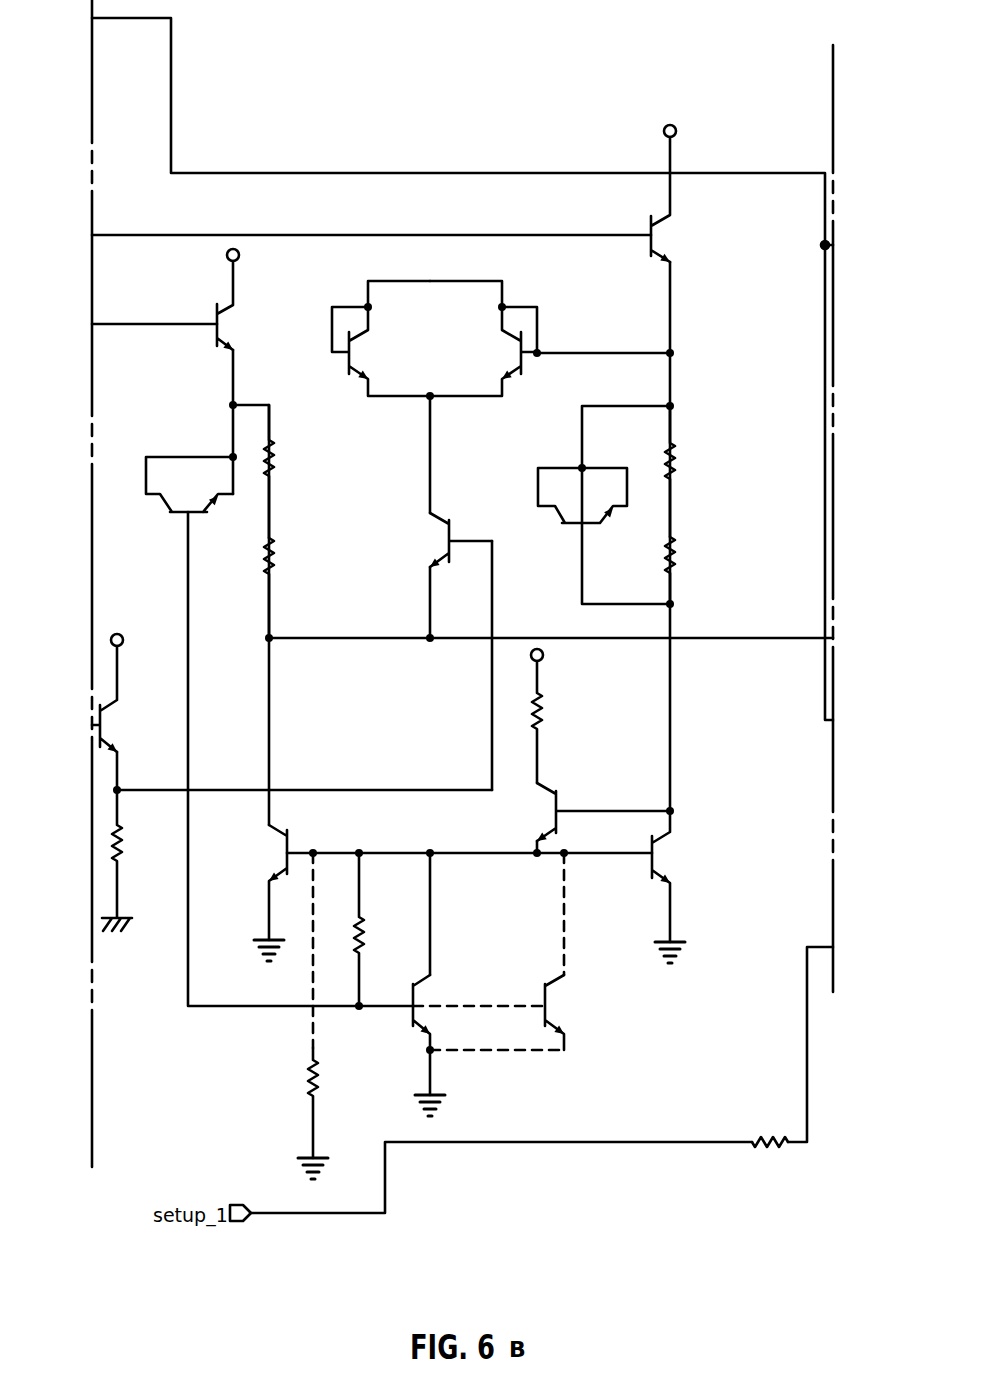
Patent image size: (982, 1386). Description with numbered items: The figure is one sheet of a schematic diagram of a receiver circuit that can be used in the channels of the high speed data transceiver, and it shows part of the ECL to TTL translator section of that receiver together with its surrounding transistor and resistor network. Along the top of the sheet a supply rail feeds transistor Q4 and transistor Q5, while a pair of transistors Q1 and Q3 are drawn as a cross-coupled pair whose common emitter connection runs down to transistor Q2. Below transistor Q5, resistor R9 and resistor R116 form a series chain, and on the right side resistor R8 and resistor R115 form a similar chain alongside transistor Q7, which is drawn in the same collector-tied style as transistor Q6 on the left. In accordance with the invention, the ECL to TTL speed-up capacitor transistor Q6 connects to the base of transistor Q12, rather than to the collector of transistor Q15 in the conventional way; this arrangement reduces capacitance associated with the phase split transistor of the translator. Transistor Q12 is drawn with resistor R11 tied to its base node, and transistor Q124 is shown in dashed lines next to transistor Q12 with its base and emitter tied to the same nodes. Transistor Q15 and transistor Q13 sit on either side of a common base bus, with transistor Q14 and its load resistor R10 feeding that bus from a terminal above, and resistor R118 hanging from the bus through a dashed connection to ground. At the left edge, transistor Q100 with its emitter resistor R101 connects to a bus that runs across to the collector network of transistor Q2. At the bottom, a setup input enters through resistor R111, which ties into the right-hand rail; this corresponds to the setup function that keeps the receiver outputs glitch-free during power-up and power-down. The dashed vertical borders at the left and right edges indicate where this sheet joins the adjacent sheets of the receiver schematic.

The transistor Q1 is at (381, 338).
The transistor Q2 is at (453, 540).
The transistor Q3 is at (483, 338).
The transistor Q4 is at (672, 193).
The transistor Q5 is at (234, 299).
The ECL to TTL speed-up capacitor transistor Q6 is at (189, 484).
The transistor Q7 is at (604, 505).
The transistor Q12 is at (443, 1045).
The transistor Q13 is at (678, 887).
The transistor Q14 is at (589, 812).
The transistor Q15 is at (263, 893).
The transistor Q100 is at (129, 693).
The transistor Q124 is at (579, 1012).
The resistor R8 is at (688, 471).
The resistor R9 is at (270, 471).
The resistor R10 is at (560, 716).
The resistor R11 is at (382, 929).
The resistor R101 is at (142, 860).
The resistor R111 is at (774, 1129).
The resistor R115 is at (700, 570).
The resistor R116 is at (297, 588).
The resistor R118 is at (338, 1113).